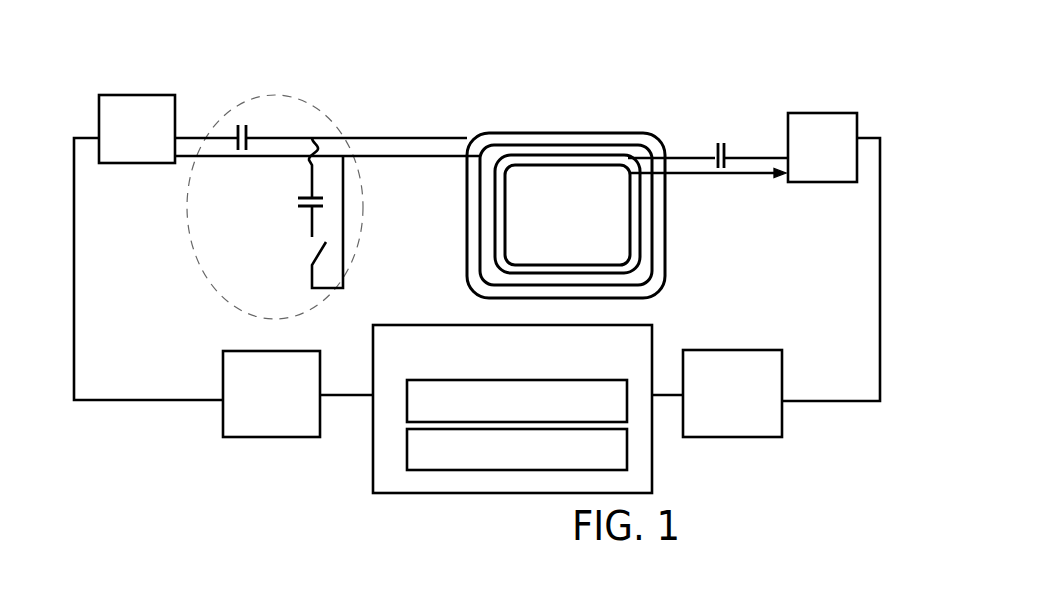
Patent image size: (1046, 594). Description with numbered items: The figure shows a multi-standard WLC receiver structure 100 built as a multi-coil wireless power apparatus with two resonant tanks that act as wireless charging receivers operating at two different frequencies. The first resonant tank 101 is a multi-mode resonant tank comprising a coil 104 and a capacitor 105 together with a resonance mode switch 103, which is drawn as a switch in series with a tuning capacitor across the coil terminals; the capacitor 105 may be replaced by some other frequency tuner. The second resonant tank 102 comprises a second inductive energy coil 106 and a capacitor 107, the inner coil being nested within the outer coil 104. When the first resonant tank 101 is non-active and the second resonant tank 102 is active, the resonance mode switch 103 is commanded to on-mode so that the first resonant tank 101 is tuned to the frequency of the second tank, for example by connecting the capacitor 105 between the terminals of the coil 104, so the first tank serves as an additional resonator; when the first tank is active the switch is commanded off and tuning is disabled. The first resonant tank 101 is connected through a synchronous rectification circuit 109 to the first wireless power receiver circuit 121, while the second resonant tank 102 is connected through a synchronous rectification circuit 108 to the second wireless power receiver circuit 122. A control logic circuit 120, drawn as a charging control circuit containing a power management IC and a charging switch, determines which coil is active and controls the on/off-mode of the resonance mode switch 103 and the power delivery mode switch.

The multi-standard WLC receiver structure 100 is at (593, 72).
The first resonant tank 101 is at (492, 137).
The second resonant tank 102 is at (715, 147).
The resonance mode switch 103 is at (305, 239).
The coil 104 is at (558, 133).
The capacitor 105 is at (248, 120).
The second inductive energy coil 106 is at (633, 252).
The capacitor 107 is at (718, 132).
The synchronous rectification circuit 108 is at (808, 137).
The synchronous rectification circuit 109 is at (140, 107).
The control logic circuit 120 is at (645, 337).
The first wireless power receiver circuit 121 is at (298, 358).
The second wireless power receiver circuit 122 is at (762, 360).